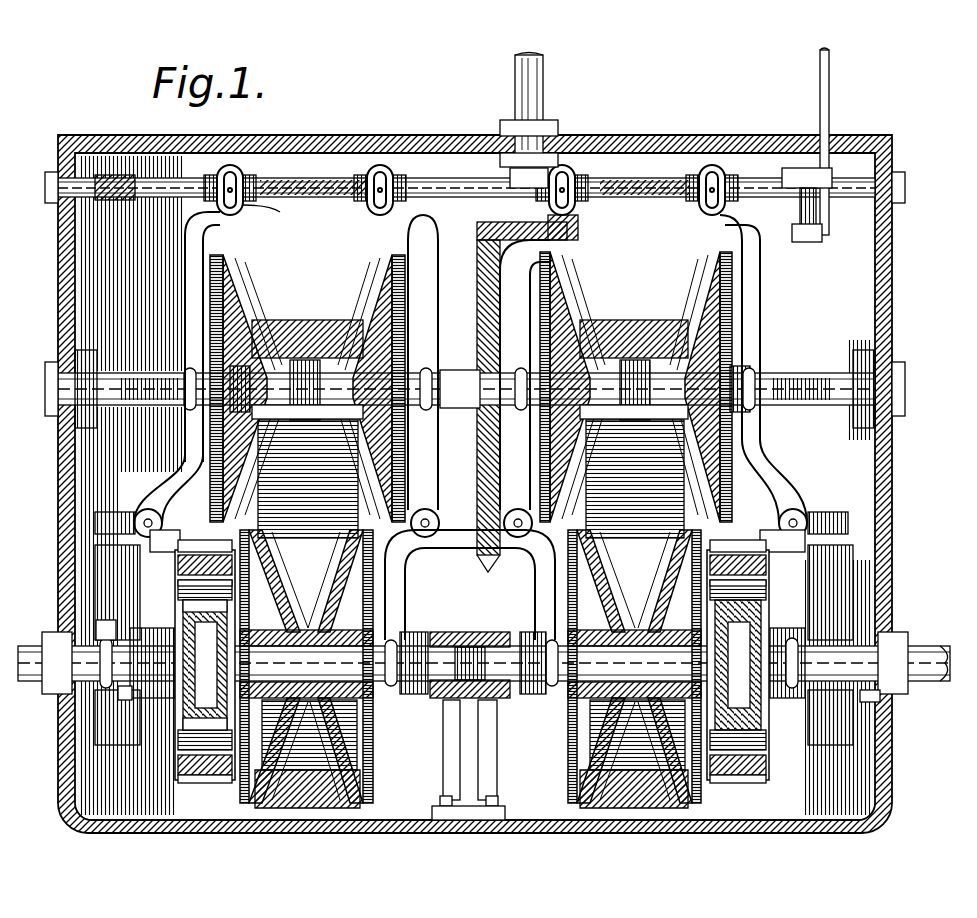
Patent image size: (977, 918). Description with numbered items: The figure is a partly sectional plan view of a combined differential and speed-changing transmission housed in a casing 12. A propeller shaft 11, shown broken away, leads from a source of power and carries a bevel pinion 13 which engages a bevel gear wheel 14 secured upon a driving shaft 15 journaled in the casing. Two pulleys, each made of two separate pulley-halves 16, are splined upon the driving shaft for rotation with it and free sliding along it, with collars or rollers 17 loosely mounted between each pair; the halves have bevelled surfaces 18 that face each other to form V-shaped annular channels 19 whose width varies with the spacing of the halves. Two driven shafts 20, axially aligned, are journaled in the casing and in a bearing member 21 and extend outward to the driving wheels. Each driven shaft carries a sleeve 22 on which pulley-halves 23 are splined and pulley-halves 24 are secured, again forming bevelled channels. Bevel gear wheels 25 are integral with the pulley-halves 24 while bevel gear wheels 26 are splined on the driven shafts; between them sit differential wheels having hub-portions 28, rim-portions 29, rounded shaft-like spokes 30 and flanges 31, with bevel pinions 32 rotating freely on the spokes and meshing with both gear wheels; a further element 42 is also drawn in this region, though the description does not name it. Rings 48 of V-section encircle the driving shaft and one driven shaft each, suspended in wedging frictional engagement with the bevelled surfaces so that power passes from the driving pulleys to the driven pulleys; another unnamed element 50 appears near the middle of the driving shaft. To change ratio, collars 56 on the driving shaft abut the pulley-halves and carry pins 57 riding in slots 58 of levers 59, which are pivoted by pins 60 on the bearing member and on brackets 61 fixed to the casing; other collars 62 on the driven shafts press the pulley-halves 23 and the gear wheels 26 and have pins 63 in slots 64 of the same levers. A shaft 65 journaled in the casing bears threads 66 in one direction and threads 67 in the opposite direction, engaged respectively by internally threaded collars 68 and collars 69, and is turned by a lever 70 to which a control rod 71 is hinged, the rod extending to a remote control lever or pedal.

The propeller shaft 11 is at (515, 90).
The casing 12 is at (670, 136).
The bevel pinion 13 is at (565, 240).
The bevel gear wheel 14 is at (480, 232).
The driving shaft 15 is at (140, 405).
The pulley-halves 16 is at (225, 258).
The collars or rollers 17 is at (320, 345).
The bevelled surfaces 18 is at (235, 310).
The annular channels or grooves 19 is at (475, 275).
The driven shafts 20 is at (40, 646).
The bearing member 21 is at (513, 700).
The sleeves 22 is at (305, 632).
The pulley-halves 23 is at (365, 772).
The pulley-halves 24 is at (240, 795).
The bevel gear wheels 25 is at (250, 620).
The bevel gear wheels 26 is at (140, 635).
The hub-portions 28 is at (472, 665).
The rim-portions 29 is at (178, 562).
The spokes 30 is at (183, 606).
The flanges 31 is at (190, 548).
The bevel pinions 32 is at (178, 585).
The gear hub 42 is at (210, 783).
The rings 48 is at (471, 479).
The central collar 50 is at (400, 370).
The collars 56 is at (190, 378).
The pins 57 is at (180, 405).
The slots 58 is at (184, 380).
The levers 59 is at (185, 320).
The pins 60 is at (160, 518).
The brackets 61 is at (473, 522).
The collars 62 is at (120, 700).
The pins 63 is at (115, 668).
The slots 64 is at (405, 640).
The shaft 65 is at (120, 170).
The threads 66 is at (440, 188).
The threads 67 is at (312, 180).
The internally threaded collars 68 is at (300, 205).
The internally threaded collars 69 is at (250, 205).
The lever 70 is at (782, 175).
The control rod 71 is at (820, 96).